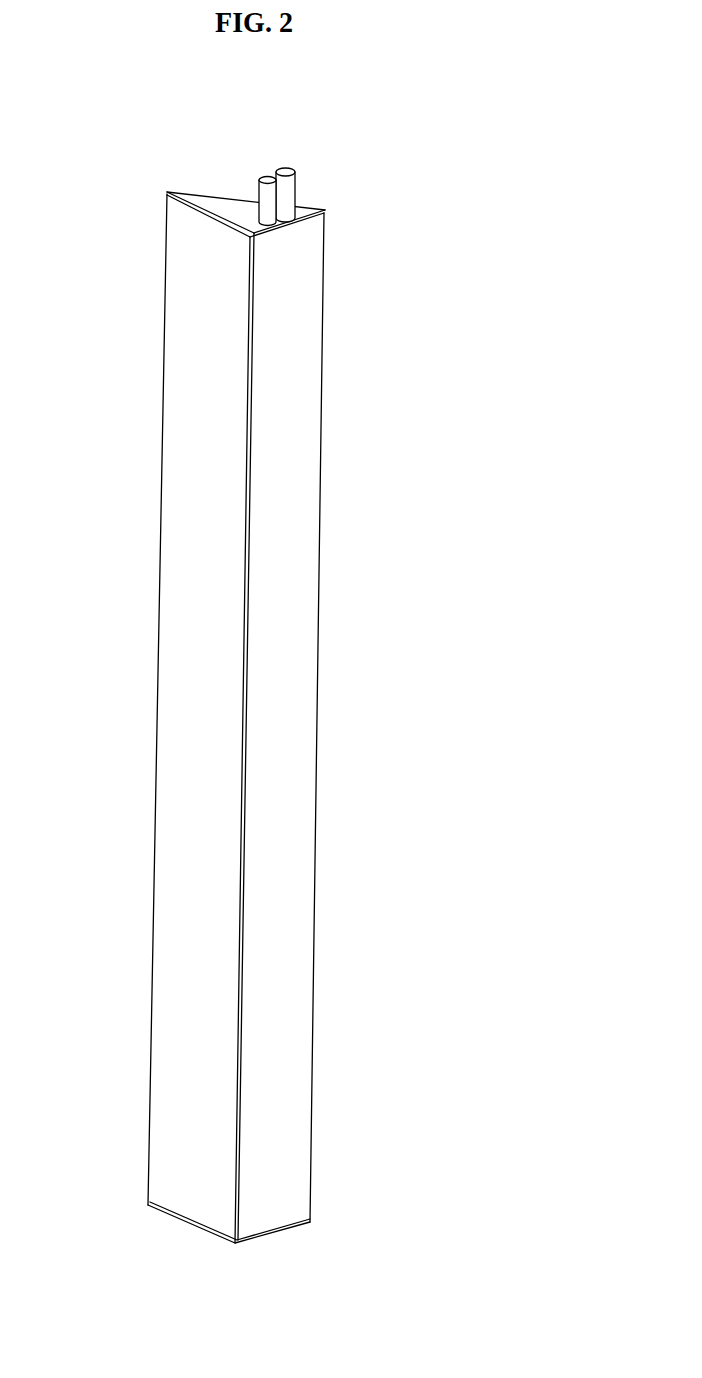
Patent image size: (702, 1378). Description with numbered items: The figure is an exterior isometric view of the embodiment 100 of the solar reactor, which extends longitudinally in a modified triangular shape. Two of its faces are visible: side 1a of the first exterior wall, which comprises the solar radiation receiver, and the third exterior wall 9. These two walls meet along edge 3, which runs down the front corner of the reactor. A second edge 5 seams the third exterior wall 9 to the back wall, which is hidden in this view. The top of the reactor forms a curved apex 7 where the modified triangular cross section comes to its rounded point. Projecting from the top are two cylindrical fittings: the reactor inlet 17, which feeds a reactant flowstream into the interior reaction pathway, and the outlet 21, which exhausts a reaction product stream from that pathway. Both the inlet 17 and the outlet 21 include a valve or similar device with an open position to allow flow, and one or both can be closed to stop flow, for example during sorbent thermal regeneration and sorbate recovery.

The solar reactor 100 is at (309, 687).
The side of exterior wall 1a is at (212, 707).
The edge 3 is at (250, 507).
The edge 5 is at (322, 392).
The curved apex 7 is at (168, 192).
The third exterior wall 9 is at (280, 550).
The reactor inlet 17 is at (266, 178).
The outlet 21 is at (284, 170).